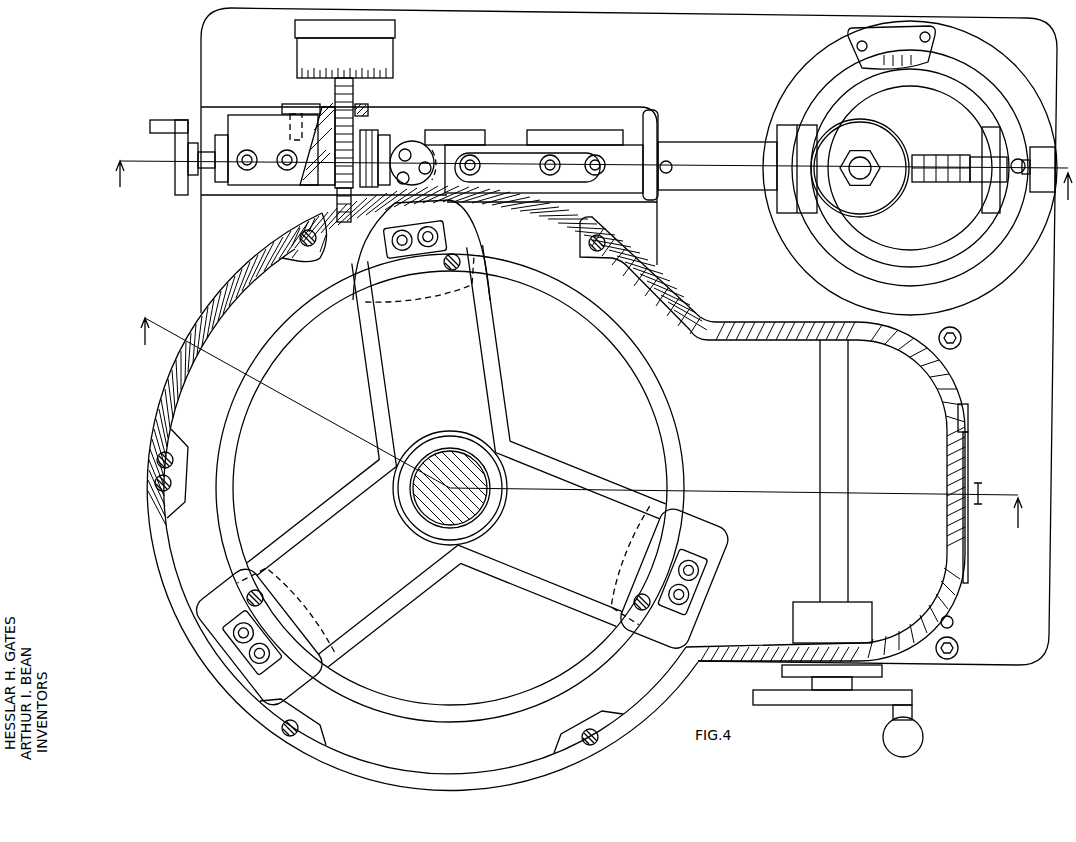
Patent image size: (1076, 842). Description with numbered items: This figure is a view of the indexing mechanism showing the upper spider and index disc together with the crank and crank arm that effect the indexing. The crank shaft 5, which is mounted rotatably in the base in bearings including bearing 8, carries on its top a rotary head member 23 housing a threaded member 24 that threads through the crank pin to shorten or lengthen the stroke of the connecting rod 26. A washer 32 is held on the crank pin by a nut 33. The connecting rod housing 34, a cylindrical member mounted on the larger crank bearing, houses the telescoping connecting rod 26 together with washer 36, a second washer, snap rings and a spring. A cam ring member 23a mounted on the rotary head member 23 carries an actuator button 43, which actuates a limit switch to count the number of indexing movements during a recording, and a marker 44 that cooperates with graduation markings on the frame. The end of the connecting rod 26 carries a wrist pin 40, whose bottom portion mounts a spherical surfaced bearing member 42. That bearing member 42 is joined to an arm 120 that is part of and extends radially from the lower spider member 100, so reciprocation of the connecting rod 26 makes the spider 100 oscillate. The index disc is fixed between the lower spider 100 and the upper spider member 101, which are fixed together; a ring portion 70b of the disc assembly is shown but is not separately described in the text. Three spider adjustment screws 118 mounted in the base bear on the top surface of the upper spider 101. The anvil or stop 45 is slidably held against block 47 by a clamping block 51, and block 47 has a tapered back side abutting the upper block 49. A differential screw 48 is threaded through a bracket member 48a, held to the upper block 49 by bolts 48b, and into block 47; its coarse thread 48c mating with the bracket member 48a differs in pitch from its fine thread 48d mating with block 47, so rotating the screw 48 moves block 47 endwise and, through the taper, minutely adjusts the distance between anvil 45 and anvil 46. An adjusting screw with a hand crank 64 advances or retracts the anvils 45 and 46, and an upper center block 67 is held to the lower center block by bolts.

The crank shaft 5 is at (573, 430).
The bearing 8 is at (593, 191).
The rotary head member 23 is at (945, 98).
The cam ring member 23a is at (1004, 101).
The threaded member 24 is at (946, 183).
The connecting rod 26 is at (570, 145).
The washer 32 is at (903, 145).
The nut 33 is at (853, 152).
The connecting rod housing 34 is at (720, 142).
The washer 36 is at (830, 706).
The wrist pin 40 is at (412, 186).
The spherical surfaced bearing member 42 is at (366, 188).
The actuator button 43 is at (1022, 158).
The marker 44 is at (937, 44).
The anvil or stop 45 is at (384, 135).
The anvil 46 is at (645, 138).
The block 47 is at (324, 190).
The differential screw 48 is at (396, 54).
The bracket member 48a is at (369, 108).
The bolts 48b is at (293, 103).
The coarse thread 48c is at (338, 100).
The fine thread 48d is at (345, 222).
The upper block 49 is at (262, 188).
The clamping block 51 is at (1040, 192).
The hand crank 64 is at (180, 188).
The upper center block 67 is at (486, 136).
The ring 70b is at (237, 468).
The lower spider member 100 is at (445, 341).
The upper spider member 101 is at (495, 318).
The spider adjustment screws 118 is at (452, 271).
The arm 120 is at (457, 206).